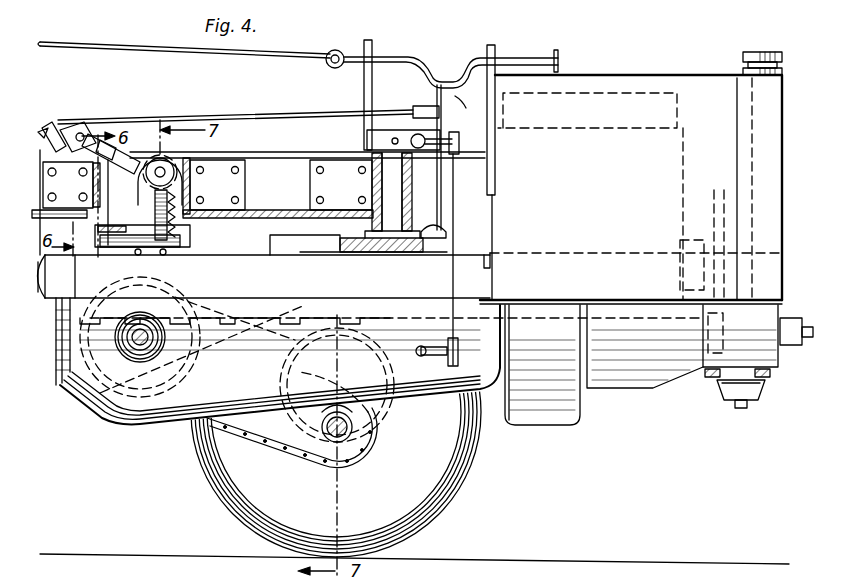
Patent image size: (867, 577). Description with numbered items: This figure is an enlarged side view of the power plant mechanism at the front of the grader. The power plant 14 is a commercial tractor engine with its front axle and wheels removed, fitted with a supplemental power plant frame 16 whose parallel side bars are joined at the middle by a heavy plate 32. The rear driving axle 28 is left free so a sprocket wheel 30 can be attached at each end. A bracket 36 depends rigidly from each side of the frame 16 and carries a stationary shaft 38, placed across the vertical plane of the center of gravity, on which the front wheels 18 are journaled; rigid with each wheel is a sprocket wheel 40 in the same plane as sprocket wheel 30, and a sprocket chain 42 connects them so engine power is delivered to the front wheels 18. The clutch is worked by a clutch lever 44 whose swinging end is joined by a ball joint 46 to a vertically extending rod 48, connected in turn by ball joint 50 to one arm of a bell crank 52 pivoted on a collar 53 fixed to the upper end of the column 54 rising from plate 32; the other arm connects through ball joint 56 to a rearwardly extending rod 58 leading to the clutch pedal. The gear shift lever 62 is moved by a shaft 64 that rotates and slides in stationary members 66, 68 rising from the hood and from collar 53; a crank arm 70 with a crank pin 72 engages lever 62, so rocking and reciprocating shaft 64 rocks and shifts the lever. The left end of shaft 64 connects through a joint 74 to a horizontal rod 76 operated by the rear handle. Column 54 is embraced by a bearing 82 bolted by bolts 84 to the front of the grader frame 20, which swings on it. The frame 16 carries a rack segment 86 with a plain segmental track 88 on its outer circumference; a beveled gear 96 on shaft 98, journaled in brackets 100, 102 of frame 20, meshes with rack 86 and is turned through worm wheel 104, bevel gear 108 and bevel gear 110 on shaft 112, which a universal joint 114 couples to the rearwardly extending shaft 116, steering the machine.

The power plant 14 is at (648, 410).
The power plant frame 16 is at (250, 242).
The front wheels 18 is at (438, 462).
The grader frame 20 is at (276, 158).
The rear driving axle 28 is at (140, 345).
The sprocket wheel 30 is at (192, 337).
The heavy plate 32 is at (358, 252).
The bracket 36 is at (372, 352).
The stationary shaft 38 is at (355, 440).
The sprocket wheel 40 is at (312, 437).
The sprocket chain 42 is at (237, 452).
The clutch lever 44 is at (435, 335).
The ball joint 46 is at (455, 366).
The vertically extending rod 48 is at (457, 206).
The ball joint 50 is at (459, 146).
The bell crank 52 is at (445, 133).
The collar 53 is at (385, 130).
The column 54 is at (395, 194).
The ball joint 56 is at (443, 117).
The horizontally rearwardly extending rod 58 is at (268, 120).
The gear shift lever 62 is at (442, 178).
The shaft 64 is at (392, 58).
The stationary member 66 is at (497, 58).
The stationary member 68 is at (368, 40).
The crank arm 70 is at (440, 78).
The crank pin 72 is at (469, 95).
The joint 74 is at (326, 52).
The horizontally disposed rod 76 is at (78, 44).
The bearing 82 is at (365, 195).
The bolts 84 is at (345, 160).
The rack segment 86 is at (282, 256).
The segmental track 88 is at (58, 300).
The beveled gear 96 is at (160, 240).
The shaft 98 is at (214, 186).
The bracket 100 is at (72, 218).
The bracket 102 is at (262, 210).
The worm wheel 104 is at (150, 240).
The bevel gear 108 is at (244, 139).
The bevel gear 110 is at (78, 270).
The shaft 112 is at (155, 158).
The universal joint 114 is at (80, 133).
The rearwardly extending shaft 116 is at (45, 136).